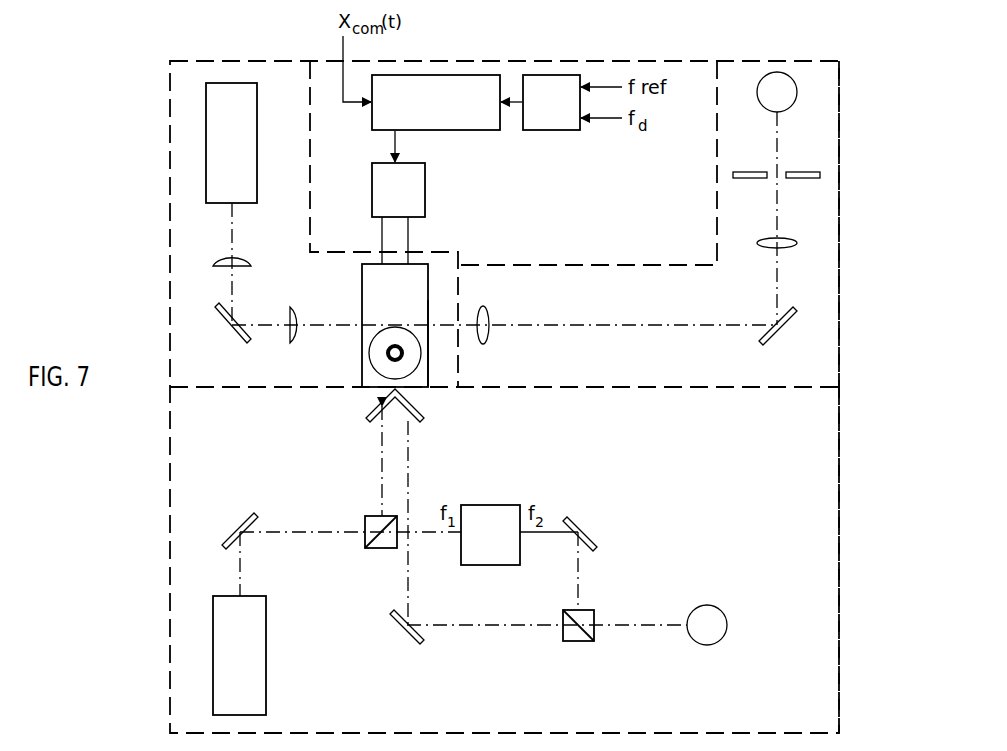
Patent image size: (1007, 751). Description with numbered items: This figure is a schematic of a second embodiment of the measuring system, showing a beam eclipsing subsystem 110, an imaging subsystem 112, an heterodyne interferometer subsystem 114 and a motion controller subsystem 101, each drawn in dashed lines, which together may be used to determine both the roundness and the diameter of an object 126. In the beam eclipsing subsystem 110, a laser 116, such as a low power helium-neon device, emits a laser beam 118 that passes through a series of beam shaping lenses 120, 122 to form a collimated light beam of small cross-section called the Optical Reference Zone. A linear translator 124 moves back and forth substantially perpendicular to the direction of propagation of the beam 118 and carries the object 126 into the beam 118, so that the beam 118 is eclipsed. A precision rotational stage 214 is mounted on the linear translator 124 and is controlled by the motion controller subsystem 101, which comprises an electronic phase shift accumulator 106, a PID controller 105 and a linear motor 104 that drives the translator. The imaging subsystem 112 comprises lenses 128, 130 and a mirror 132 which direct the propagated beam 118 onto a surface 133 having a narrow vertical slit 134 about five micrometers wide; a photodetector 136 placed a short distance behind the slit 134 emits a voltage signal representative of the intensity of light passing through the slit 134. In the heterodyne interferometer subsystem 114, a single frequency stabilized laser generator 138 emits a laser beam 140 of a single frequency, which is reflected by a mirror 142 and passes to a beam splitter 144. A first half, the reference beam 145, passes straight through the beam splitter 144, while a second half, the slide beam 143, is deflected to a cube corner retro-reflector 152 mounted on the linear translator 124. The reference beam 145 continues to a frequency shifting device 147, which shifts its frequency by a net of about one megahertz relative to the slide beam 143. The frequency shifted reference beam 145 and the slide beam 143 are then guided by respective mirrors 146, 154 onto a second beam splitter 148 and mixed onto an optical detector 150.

The motion controller subsystem 101 is at (665, 60).
The linear motor 104 is at (427, 200).
The PID controller 105 is at (456, 122).
The electronic phase shift accumulator 106 is at (566, 124).
The beam eclipsing subsystem 110 is at (238, 60).
The imaging subsystem 112 is at (840, 243).
The heterodyne interferometer subsystem 114 is at (840, 550).
The laser 116 is at (208, 152).
The laser beam 118 is at (232, 223).
The beam shaping lens 120 is at (216, 265).
The beam shaping lens 122 is at (296, 338).
The linear translator 124 is at (362, 290).
The object 126 is at (385, 360).
The lens 128 is at (488, 320).
The lens 130 is at (797, 240).
The mirror 132 is at (795, 330).
The surface 133 is at (825, 176).
The vertical slit 134 is at (790, 170).
The photodetector 136 is at (797, 95).
The single frequency stabilized laser generator 138 is at (222, 680).
The laser beam 140 is at (240, 574).
The mirror 142 is at (225, 530).
The slide beam 143 is at (382, 472).
The beam splitter 144 is at (382, 550).
The reference beam 145 is at (423, 548).
The mirror 146 is at (598, 534).
The frequency shifting device 147 is at (500, 505).
The second beam splitter 148 is at (585, 645).
The optical detector 150 is at (727, 625).
The cube corner retro-reflector 152 is at (425, 415).
The mirror 154 is at (405, 642).
The precision rotational stage 214 is at (430, 372).